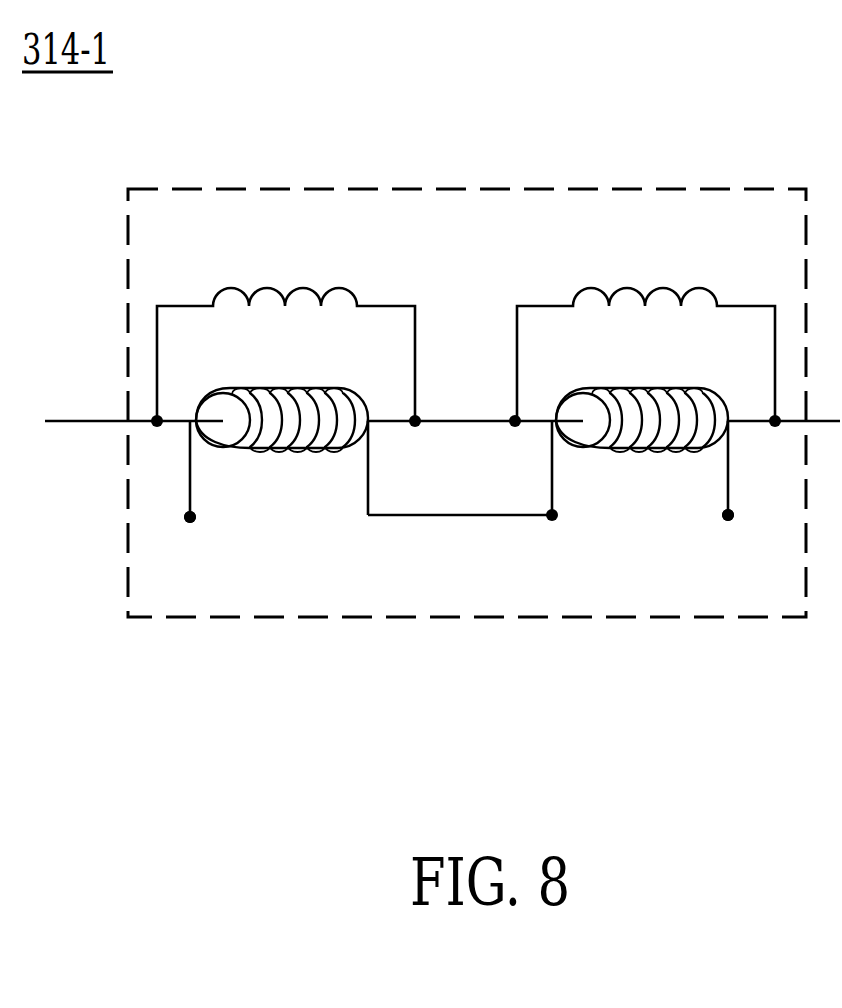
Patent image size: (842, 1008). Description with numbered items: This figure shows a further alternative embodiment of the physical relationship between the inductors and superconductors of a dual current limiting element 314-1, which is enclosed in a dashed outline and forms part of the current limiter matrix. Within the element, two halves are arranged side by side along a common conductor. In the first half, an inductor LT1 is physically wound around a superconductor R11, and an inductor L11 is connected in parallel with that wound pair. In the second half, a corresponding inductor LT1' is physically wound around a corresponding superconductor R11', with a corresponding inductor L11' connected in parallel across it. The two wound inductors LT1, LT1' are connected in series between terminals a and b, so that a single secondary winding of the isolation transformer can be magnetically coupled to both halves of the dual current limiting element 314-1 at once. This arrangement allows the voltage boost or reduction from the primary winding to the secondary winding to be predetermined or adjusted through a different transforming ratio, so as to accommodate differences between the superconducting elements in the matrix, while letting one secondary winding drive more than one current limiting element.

The current limiting element 314-1 is at (428, 188).
The inductor L11 is at (286, 328).
The inductor L11' is at (646, 328).
The inductor LT1 is at (282, 391).
The inductor LT1' is at (642, 391).
The superconductor R11 is at (275, 451).
The superconductor R11' is at (635, 451).
The terminal a is at (207, 515).
The terminal b is at (746, 515).